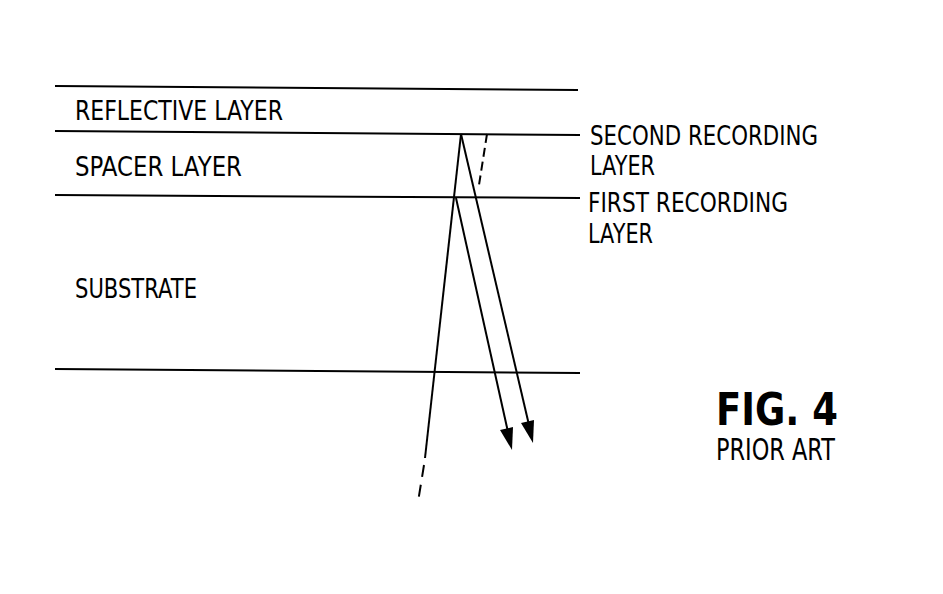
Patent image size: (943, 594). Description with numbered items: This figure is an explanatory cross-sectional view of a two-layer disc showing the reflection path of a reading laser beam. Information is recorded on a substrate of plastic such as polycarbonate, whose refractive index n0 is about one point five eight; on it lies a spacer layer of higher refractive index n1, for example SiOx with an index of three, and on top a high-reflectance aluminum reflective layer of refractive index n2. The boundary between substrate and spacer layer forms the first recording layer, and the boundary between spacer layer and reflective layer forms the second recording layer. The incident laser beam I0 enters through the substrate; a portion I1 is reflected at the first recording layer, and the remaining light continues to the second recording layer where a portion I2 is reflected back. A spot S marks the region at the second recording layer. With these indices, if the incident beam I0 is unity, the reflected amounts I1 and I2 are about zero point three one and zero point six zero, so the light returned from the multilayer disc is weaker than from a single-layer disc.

The spot / separation distance S is at (482, 163).
The incident laser beam intensity I0 is at (371, 436).
The light reflected from first recording layer I1 is at (471, 457).
The light reflected from second recording layer I2 is at (611, 416).
The refractive index of substrate n0 is at (337, 286).
The refractive index of spacer layer n1 is at (336, 164).
The refractive index of reflective layer n2 is at (337, 112).